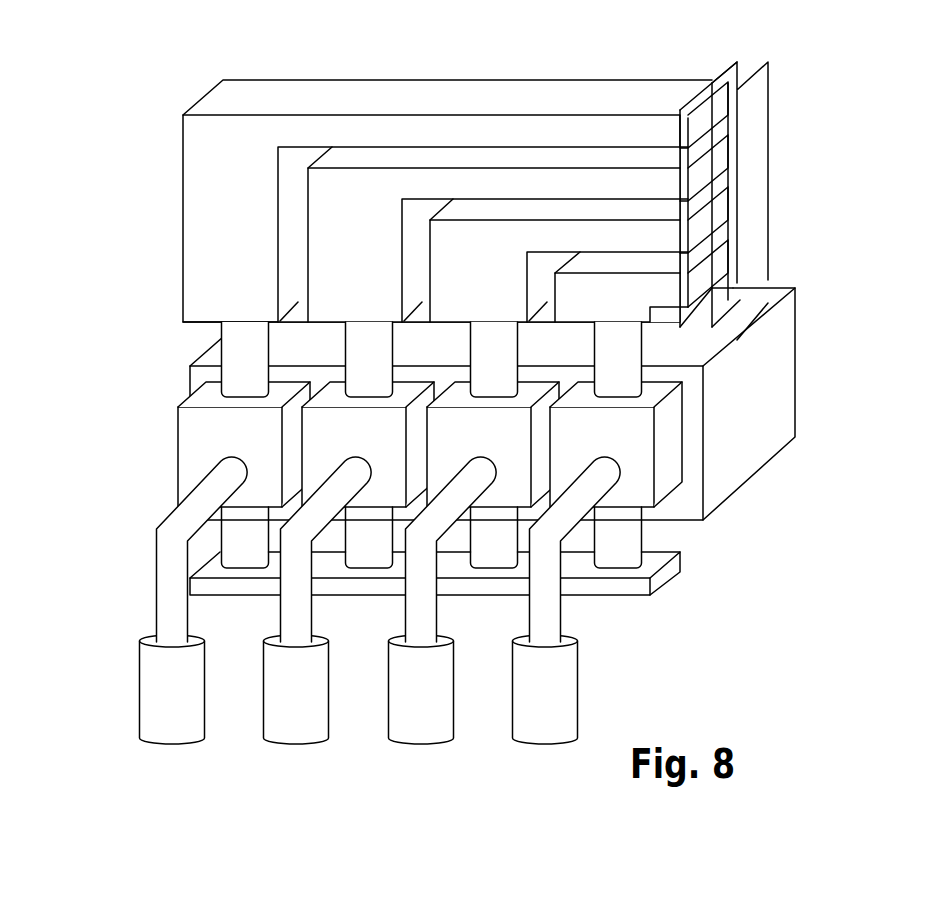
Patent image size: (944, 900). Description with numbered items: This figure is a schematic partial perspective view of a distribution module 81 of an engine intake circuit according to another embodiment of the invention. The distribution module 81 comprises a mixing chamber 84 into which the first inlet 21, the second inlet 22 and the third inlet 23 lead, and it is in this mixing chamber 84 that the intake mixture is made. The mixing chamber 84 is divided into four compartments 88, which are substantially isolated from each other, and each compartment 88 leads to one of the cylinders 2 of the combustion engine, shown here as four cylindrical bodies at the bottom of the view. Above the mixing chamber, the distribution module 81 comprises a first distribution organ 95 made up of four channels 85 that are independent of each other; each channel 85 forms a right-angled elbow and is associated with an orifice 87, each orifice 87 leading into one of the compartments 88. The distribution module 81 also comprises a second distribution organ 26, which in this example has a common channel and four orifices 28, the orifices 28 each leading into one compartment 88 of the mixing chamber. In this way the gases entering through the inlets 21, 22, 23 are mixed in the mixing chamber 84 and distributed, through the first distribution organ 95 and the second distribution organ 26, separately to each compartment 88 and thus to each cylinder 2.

The cylinders 2 is at (275, 720).
The first inlet 21 is at (683, 500).
The second inlet 22 is at (757, 128).
The third inlet 23 is at (673, 573).
The second distribution organ 26 is at (577, 563).
The orifices 28 is at (238, 568).
The distribution module 81 is at (409, 212).
The mixing chamber 84 is at (428, 480).
The channels 85 is at (338, 228).
The orifices 87 is at (203, 321).
The compartments 88 is at (213, 435).
The first distribution organ 95 is at (764, 171).